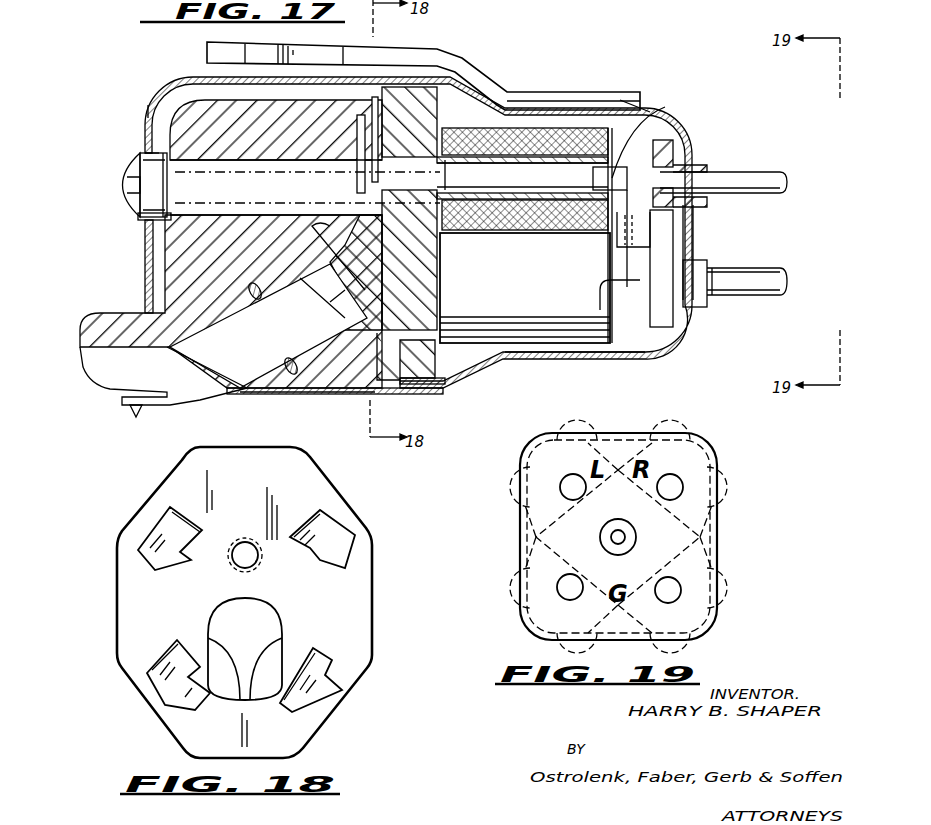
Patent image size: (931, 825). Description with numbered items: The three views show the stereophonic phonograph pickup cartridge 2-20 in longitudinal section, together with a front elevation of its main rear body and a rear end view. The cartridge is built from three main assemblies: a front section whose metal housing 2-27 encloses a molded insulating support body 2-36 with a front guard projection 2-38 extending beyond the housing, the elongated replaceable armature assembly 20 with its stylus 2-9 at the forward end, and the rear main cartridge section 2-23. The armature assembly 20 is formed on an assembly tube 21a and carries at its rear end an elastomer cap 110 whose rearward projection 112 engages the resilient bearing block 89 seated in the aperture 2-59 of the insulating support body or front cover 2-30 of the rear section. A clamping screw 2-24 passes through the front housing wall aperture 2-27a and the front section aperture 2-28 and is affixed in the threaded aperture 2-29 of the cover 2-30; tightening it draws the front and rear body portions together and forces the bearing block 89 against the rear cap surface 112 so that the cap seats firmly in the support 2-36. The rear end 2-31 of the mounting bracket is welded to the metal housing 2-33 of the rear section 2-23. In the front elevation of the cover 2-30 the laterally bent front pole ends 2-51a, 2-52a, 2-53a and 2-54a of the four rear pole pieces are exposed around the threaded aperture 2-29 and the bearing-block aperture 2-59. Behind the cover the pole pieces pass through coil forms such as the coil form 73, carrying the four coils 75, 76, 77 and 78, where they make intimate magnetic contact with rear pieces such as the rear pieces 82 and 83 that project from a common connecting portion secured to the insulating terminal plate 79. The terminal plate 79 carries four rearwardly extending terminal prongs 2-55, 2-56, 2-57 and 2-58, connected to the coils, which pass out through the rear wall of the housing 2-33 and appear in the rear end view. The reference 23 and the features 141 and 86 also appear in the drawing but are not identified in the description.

In FIG. 17, the stereophonic phonograph pickup cartridge 2-20 is at (128, 105).
In FIG. 17, the front section housing 2-27 is at (165, 80).
In FIG. 17, the front housing wall aperture 2-27a is at (150, 150).
In FIG. 17, the insulating support body 2-36 is at (195, 100).
In FIG. 17, the clamping screw 2-24 is at (133, 163).
In FIG. 17, the aperture 2-28 is at (150, 222).
In FIG. 17, the front guard projection 2-38 is at (110, 325).
In FIG. 17, the rear cartridge section 2-23 is at (548, 83).
In FIG. 17, the stylus 2-9 is at (128, 408).
In FIG. 17, the replaceable armature assembly 20 is at (194, 396).
In FIG. 17, the assembly tube 21a is at (268, 341).
In FIG. 17, the pivot pin 23 is at (228, 297).
In FIG. 17, the spring 141 is at (325, 227).
In FIG. 17, the rearward projection 112 is at (420, 268).
In FIG. 17, the coil 77 is at (530, 293).
In FIG. 19, the coil 77 is at (728, 585).
In FIG. 17, the cap 110 is at (395, 370).
In FIG. 17, the resilient bearing block 89 is at (412, 380).
In FIG. 17, the threaded aperture 2-29 is at (452, 110).
In FIG. 18, the threaded aperture 2-29 is at (257, 565).
In FIG. 17, the insulating support body 2-30 is at (495, 38).
In FIG. 18, the insulating support body 2-30 is at (374, 590).
In FIG. 17, the rear end of mounting bracket 2-31 is at (585, 100).
In FIG. 17, the rear piece 82 is at (640, 108).
In FIG. 17, the lead wire 86 is at (640, 138).
In FIG. 17, the terminal prong 2-58 is at (740, 170).
In FIG. 19, the terminal prong 2-58 is at (567, 478).
In FIG. 17, the rear piece 83 is at (640, 272).
In FIG. 17, the terminal prong 2-55 is at (745, 268).
In FIG. 19, the terminal prong 2-55 is at (567, 592).
In FIG. 17, the coil form 73 is at (600, 358).
In FIG. 17, the metal housing 2-33 is at (535, 362).
In FIG. 18, the front pole end 2-52a is at (160, 528).
In FIG. 18, the front pole end 2-54a is at (333, 530).
In FIG. 18, the front pole end 2-53a is at (165, 688).
In FIG. 18, the front pole end 2-51a is at (322, 690).
In FIG. 18, the aperture 2-59 is at (272, 628).
In FIG. 19, the coil 78 is at (587, 418).
In FIG. 19, the coil 76 is at (688, 425).
In FIG. 19, the coil 75 is at (512, 582).
In FIG. 19, the terminal plate 79 is at (720, 522).
In FIG. 19, the terminal prong 2-56 is at (677, 478).
In FIG. 19, the terminal prong 2-57 is at (675, 600).